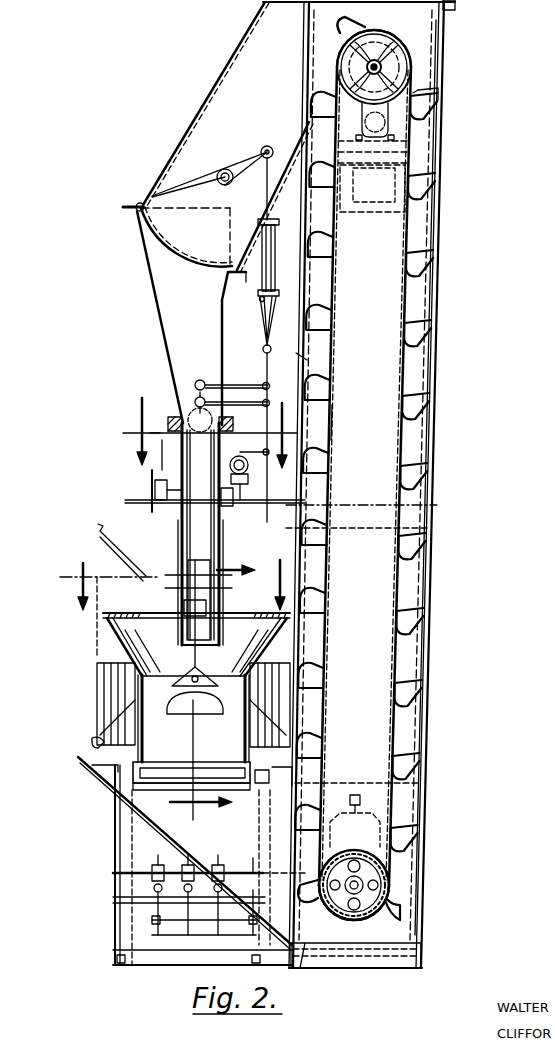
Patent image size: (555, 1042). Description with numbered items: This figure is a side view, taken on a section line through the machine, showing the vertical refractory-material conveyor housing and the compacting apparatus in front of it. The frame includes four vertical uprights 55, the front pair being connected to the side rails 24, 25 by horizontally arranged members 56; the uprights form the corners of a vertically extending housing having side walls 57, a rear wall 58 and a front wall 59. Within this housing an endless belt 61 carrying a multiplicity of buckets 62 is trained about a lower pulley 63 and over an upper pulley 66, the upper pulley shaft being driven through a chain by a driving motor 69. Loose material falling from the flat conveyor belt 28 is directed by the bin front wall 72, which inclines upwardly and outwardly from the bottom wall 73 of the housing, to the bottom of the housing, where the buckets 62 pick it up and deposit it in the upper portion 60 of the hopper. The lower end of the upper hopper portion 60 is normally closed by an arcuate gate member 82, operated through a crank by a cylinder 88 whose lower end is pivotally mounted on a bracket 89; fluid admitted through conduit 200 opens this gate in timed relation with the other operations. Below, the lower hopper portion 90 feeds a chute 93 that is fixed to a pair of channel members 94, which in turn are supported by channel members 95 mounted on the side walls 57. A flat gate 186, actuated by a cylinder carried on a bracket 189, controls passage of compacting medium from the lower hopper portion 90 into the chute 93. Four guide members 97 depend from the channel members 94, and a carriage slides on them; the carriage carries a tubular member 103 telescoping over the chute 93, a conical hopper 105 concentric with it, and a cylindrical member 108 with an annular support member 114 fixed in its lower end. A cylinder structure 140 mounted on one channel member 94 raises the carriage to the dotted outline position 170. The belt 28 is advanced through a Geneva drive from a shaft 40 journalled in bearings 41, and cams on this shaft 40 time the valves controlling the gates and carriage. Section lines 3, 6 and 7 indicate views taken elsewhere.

The section line 3- 3 is at (209, 433).
The section line 6- 6 is at (178, 585).
The section line 7- 7 is at (212, 689).
The side rail 24 is at (105, 774).
The side rail 25 is at (283, 776).
The conveyor belt 28 is at (193, 766).
The shaft 40 is at (135, 862).
The bearings 41 is at (113, 875).
The vertical uprights 55 is at (334, 354).
The horizontally arranged members 56 is at (146, 788).
The side walls 57 is at (359, 484).
The rear wall 58 is at (430, 604).
The front wall 59 is at (306, 358).
The upper hopper portion 60 is at (192, 105).
The endless belt 61 is at (330, 421).
The buckets 62 is at (425, 258).
The lower pulley 63 is at (330, 906).
The pulley 66 is at (378, 48).
The driving motor 69 is at (420, 91).
The front wall 72 is at (120, 836).
The bottom wall 73 is at (326, 950).
The arcuate gate member 82 is at (168, 248).
The cylinder 88 is at (277, 257).
The bracket 89 is at (270, 302).
The lower hopper portion 90 is at (150, 320).
The chute 93 is at (180, 456).
The channel members 94 is at (155, 492).
The channel members 95 is at (337, 510).
The guide members 97 is at (172, 536).
The tubular member 103 is at (214, 588).
The conical hopper 105 is at (108, 640).
The cylindrical member 108 is at (97, 694).
The annular support member 114 is at (92, 742).
The cylinder structure 140 is at (250, 468).
The dotted outline position 170 is at (98, 533).
The gate 186 is at (186, 418).
The bracket 189 is at (176, 452).
The conduit 200 is at (261, 302).